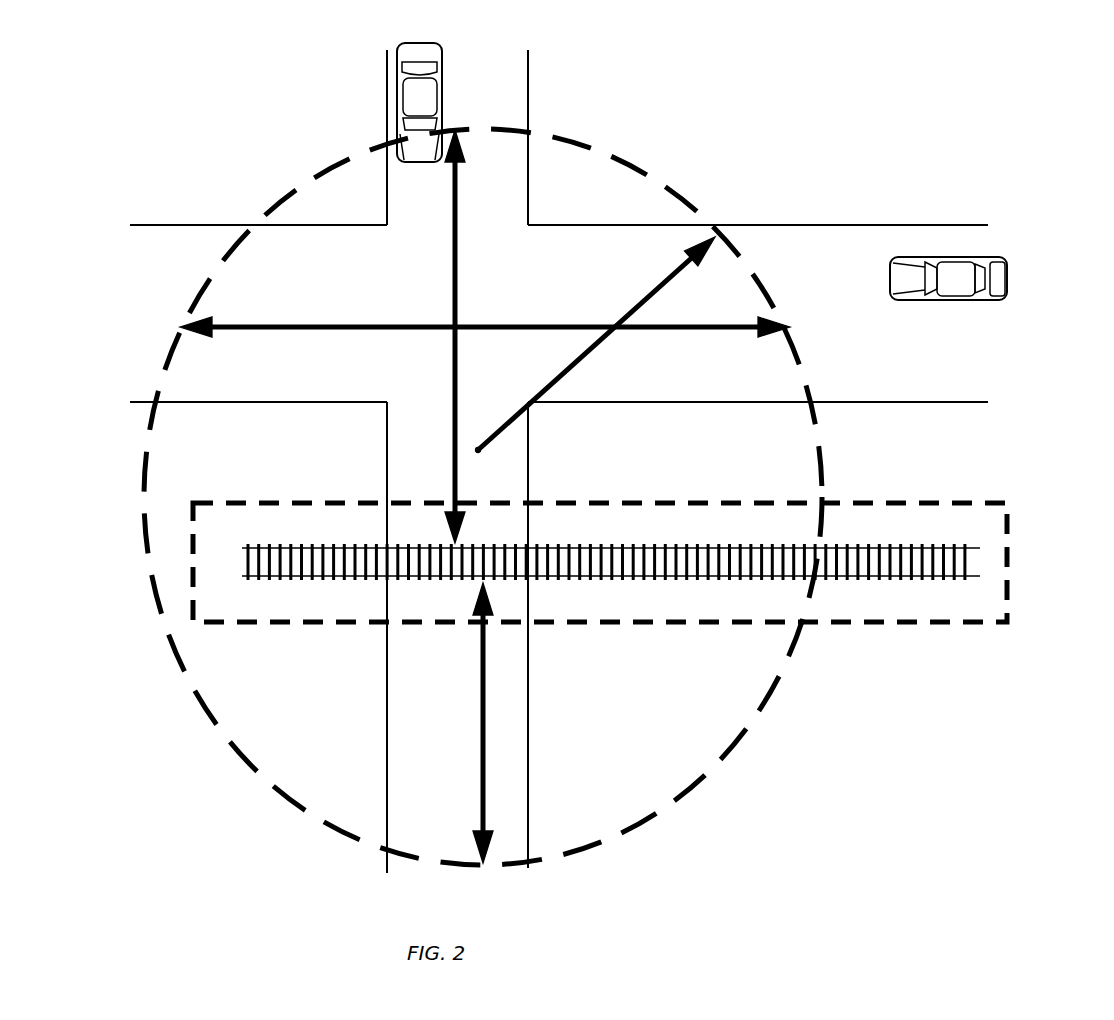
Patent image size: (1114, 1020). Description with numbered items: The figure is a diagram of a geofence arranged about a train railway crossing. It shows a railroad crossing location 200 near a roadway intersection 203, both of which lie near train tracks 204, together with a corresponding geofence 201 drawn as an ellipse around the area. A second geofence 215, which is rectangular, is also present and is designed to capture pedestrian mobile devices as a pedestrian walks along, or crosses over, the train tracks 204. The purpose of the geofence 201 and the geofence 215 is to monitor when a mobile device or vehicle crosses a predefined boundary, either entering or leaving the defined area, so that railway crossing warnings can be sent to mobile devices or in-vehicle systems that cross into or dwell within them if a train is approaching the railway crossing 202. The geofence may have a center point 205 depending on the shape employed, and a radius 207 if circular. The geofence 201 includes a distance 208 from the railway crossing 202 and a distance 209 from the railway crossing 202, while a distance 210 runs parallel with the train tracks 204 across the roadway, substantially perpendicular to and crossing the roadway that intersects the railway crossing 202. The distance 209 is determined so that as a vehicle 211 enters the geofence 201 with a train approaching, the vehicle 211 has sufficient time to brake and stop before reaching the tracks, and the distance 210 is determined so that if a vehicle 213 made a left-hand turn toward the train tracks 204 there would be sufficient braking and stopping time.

The railroad crossing location 200 is at (713, 133).
The geofence 201 is at (767, 295).
The railway crossing 202 is at (566, 642).
The roadway intersection 203 is at (541, 211).
The train tracks 204 is at (845, 577).
The center point 205 is at (478, 452).
The radius 207 is at (587, 352).
The distance 208 is at (478, 707).
The distance 209 is at (458, 278).
The distance 210 is at (327, 323).
The vehicle 211 is at (422, 92).
The vehicle 213 is at (987, 262).
The second geofence 215 is at (870, 503).